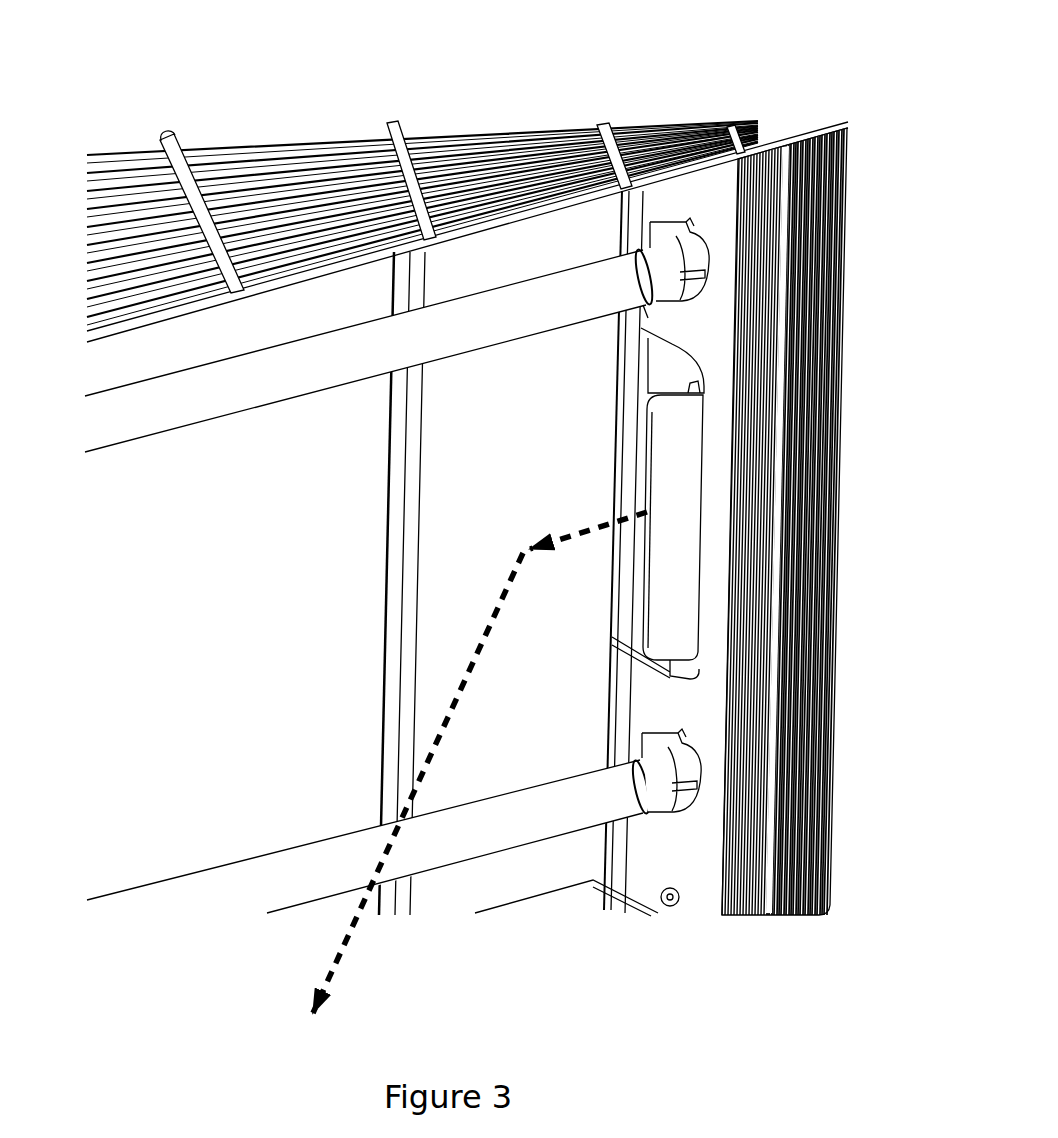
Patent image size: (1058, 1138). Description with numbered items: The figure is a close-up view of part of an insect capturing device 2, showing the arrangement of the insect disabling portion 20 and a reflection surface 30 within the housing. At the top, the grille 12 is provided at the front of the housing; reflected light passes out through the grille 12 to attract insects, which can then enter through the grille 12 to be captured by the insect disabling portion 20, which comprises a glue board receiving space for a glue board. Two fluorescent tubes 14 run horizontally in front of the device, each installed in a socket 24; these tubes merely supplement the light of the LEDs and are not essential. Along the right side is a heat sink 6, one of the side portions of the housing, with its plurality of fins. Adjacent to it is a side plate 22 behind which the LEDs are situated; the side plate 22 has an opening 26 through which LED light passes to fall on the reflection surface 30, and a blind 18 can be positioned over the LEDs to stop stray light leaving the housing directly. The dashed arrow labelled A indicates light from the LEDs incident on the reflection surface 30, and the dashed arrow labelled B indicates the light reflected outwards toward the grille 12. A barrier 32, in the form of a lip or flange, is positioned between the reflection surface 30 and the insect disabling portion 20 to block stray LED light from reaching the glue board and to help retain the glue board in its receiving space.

The insect capturing device 2 is at (195, 103).
The grille 12 is at (340, 180).
The fluorescent tube 14 is at (473, 317).
The socket 24 is at (683, 247).
The side plate 22 is at (710, 310).
The opening 26 is at (657, 382).
The blind 18 is at (680, 517).
The heat sink 6 is at (795, 648).
The reflection surface 30 is at (520, 475).
The barrier 32 is at (392, 548).
The insect disabling portion 20 is at (285, 632).